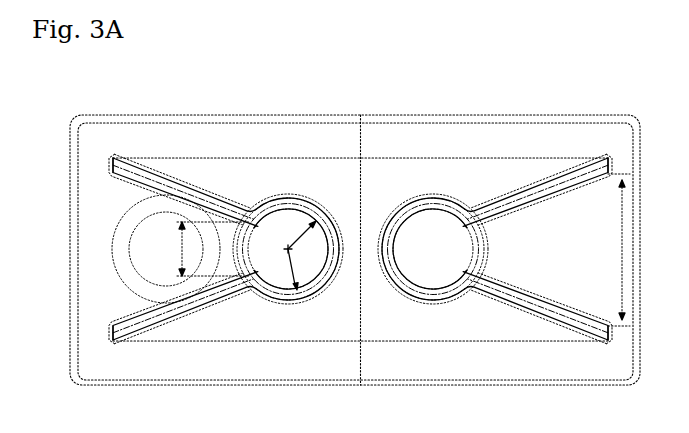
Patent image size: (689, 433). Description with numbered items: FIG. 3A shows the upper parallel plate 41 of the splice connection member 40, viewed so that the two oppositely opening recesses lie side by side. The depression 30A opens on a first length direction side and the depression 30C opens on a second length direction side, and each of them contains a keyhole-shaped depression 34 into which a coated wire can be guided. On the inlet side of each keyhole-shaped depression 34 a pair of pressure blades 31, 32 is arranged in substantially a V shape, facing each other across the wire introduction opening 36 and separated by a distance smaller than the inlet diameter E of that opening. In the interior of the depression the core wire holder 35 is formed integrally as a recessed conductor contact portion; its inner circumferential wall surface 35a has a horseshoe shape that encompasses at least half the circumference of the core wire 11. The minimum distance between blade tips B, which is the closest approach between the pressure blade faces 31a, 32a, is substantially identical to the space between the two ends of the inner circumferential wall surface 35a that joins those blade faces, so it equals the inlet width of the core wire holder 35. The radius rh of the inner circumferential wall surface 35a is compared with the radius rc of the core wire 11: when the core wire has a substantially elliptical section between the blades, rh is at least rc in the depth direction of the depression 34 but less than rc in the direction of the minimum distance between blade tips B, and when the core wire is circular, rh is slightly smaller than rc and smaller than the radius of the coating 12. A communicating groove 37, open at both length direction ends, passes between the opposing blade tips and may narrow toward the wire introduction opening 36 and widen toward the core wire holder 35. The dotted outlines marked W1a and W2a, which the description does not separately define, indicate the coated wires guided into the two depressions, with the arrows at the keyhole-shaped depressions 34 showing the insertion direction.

The depression 30A is at (215, 164).
The depression 30C is at (498, 164).
The splice connection member 40 is at (386, 135).
The parallel plate 41 is at (421, 160).
The pressure blade 31 is at (190, 167).
The pressure blade 32 is at (188, 330).
The pressure blade face 31a is at (131, 190).
The pressure blade face 32a is at (140, 312).
The core wire holder 35 is at (289, 302).
The inner circumferential wall surface 35a is at (284, 201).
The coating 12 is at (250, 205).
The core wire 11 is at (243, 300).
The communicating groove 37 is at (153, 162).
The wire introduction opening 36 is at (100, 263).
The keyhole-shaped depression 34 is at (148, 237).
The first tube W1a is at (128, 222).
The second tube W2a is at (488, 246).
The minimum distance between blade tips B is at (202, 249).
The inlet diameter E is at (616, 250).
The radius of the inner circumferential wall surface rh is at (316, 221).
The radius of the core wire rc is at (297, 290).